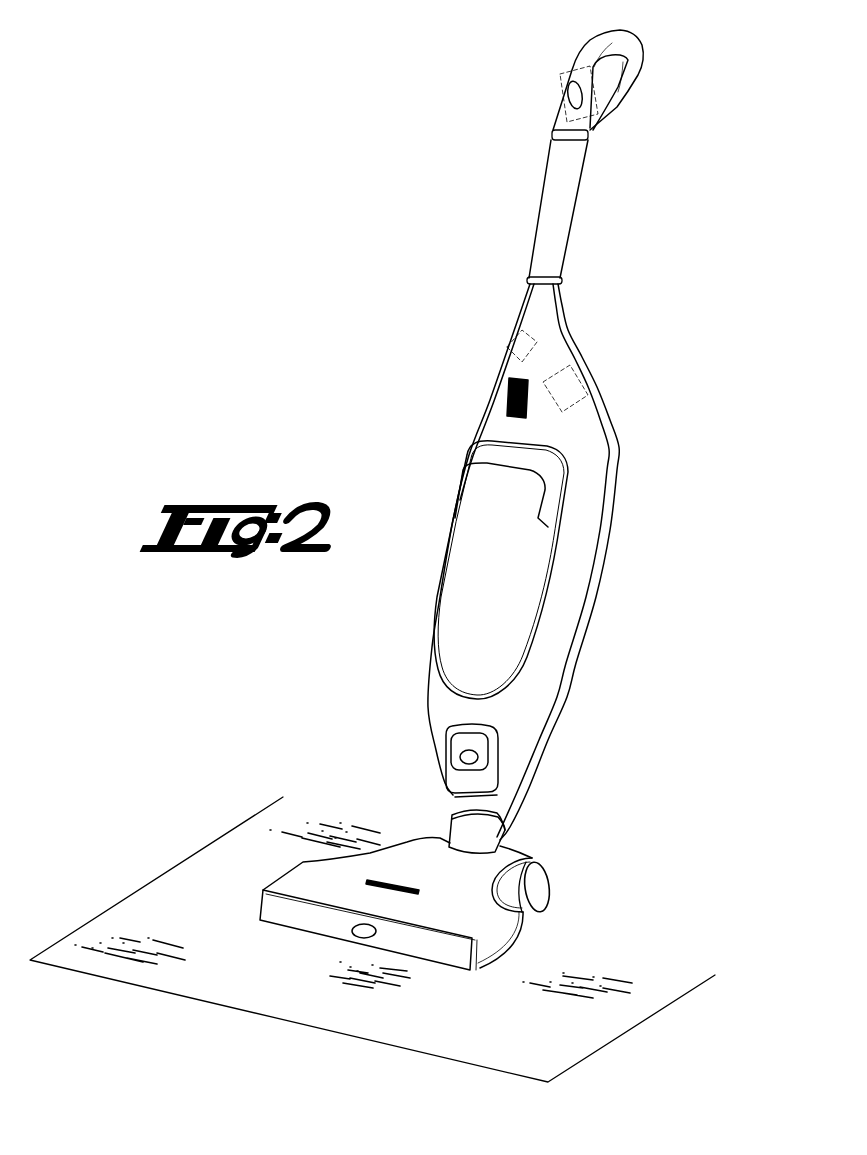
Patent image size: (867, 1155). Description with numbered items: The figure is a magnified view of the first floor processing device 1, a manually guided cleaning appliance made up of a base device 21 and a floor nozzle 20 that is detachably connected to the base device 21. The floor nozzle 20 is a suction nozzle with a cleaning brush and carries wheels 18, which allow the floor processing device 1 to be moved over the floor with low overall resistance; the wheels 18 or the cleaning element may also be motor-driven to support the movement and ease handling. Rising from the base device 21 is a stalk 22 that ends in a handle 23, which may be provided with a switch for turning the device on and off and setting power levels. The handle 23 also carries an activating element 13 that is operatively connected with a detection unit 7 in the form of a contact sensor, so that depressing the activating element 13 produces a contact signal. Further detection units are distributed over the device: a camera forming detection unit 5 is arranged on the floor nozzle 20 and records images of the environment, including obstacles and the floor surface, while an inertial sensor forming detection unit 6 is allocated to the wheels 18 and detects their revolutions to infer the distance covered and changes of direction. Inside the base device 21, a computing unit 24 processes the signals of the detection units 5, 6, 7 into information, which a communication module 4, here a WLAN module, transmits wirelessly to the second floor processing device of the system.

The floor processing device 1 is at (443, 377).
The communication module 4 is at (523, 350).
The detection unit 5 is at (357, 933).
The detection unit 6 is at (523, 870).
The detection unit 7 is at (570, 110).
The activating element 13 is at (570, 90).
The wheels 18 is at (540, 887).
The floor nozzle 20 is at (445, 953).
The base device 21 is at (552, 655).
The stalk 22 is at (552, 222).
The handle 23 is at (630, 80).
The computing unit 24 is at (568, 385).